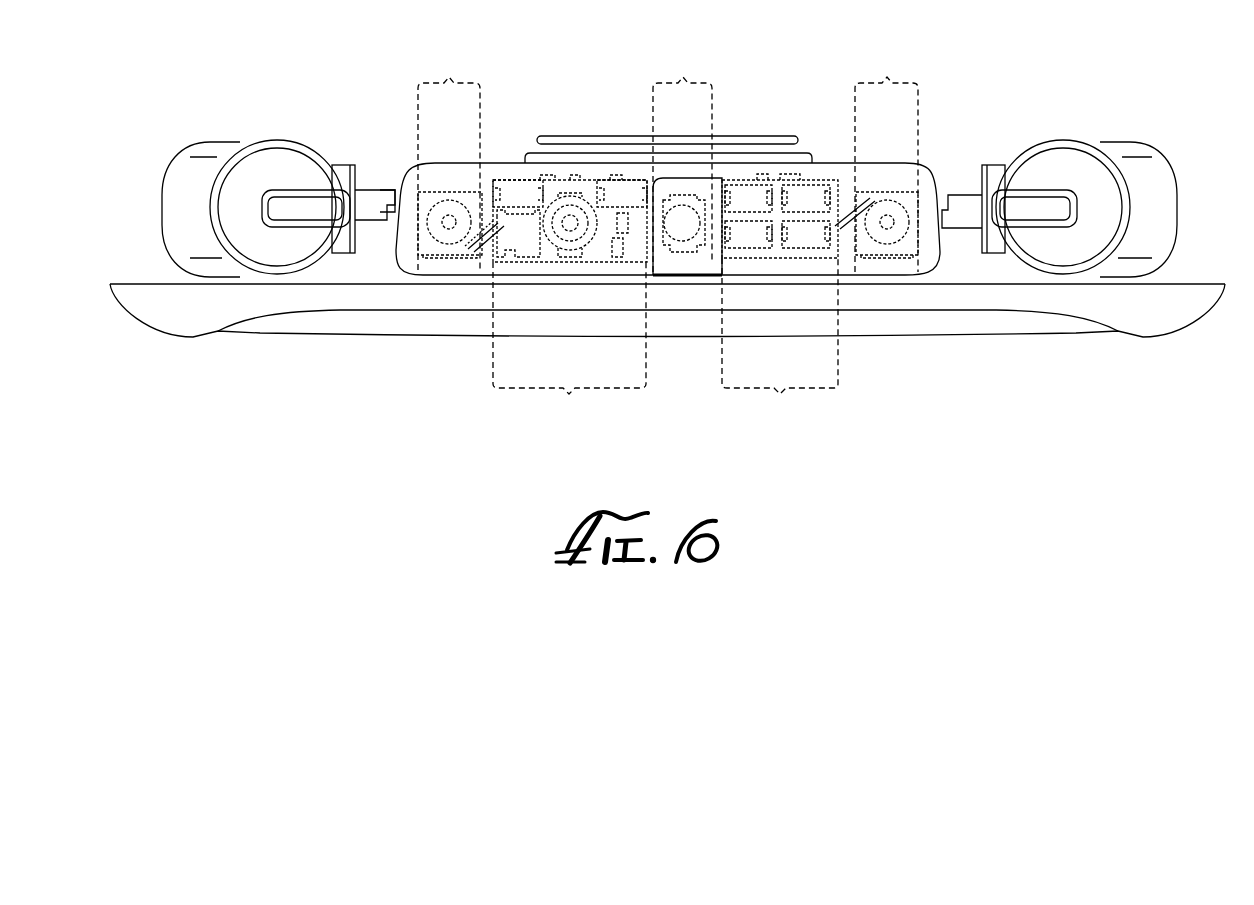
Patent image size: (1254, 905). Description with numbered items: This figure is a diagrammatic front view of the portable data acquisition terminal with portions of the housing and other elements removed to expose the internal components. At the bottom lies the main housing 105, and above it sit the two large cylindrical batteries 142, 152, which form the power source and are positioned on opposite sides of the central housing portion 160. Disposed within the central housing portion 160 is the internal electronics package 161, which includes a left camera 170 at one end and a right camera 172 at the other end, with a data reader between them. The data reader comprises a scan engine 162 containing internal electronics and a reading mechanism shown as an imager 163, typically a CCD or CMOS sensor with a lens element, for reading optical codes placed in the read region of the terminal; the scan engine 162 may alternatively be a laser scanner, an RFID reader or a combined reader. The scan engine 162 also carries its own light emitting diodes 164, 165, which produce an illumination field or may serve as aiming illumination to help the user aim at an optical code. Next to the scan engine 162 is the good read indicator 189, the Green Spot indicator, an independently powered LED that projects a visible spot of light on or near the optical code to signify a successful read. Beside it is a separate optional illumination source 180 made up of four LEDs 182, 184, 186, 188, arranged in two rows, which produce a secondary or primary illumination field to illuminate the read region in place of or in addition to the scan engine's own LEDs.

The main housing 105 is at (160, 313).
The battery 142 is at (215, 148).
The battery 152 is at (1123, 145).
The central housing portion 160 is at (930, 182).
The internal electronics package 161 is at (478, 257).
The scan engine 162 is at (570, 269).
The imager 163 is at (565, 197).
The light emitting diode 164 is at (515, 192).
The light emitting diode 165 is at (622, 192).
The left camera 170 is at (450, 205).
The right camera 172 is at (888, 210).
The illumination source 180 is at (782, 279).
The LED 182 is at (747, 192).
The LED 184 is at (813, 197).
The LED 186 is at (750, 242).
The LED 188 is at (805, 242).
The good read indicator 189 is at (682, 213).